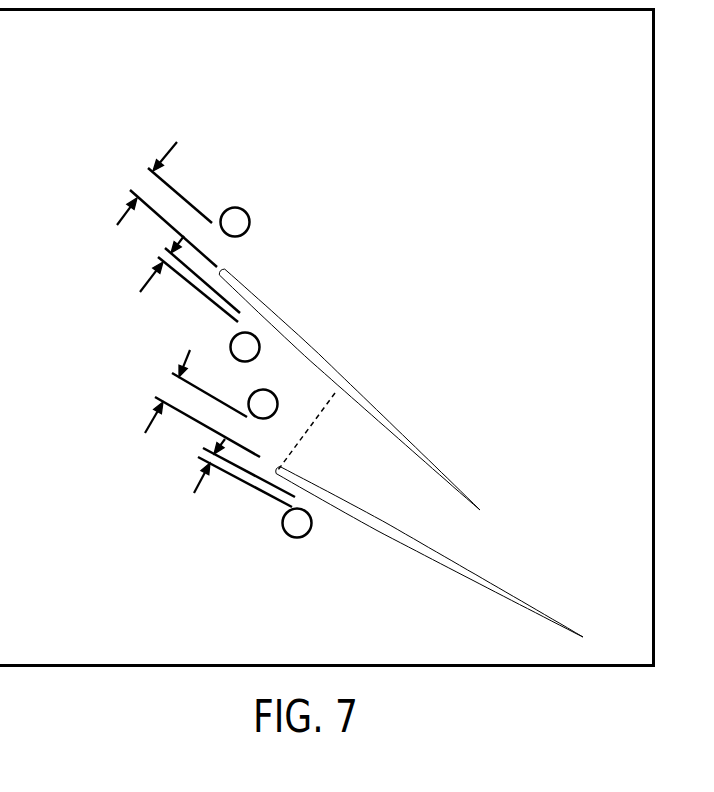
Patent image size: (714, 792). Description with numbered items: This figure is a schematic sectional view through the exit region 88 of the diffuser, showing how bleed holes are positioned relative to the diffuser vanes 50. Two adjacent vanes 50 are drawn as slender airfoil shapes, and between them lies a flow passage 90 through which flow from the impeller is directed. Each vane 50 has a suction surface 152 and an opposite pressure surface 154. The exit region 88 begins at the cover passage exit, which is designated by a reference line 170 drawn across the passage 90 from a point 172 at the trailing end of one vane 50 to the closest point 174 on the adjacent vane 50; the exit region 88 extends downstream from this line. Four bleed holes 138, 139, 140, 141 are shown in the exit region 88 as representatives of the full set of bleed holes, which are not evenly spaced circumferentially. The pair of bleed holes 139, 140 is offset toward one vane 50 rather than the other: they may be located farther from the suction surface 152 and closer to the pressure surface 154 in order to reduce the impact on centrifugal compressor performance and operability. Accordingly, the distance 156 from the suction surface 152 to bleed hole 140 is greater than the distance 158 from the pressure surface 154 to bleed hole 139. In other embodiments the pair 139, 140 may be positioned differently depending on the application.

The vane 50 is at (419, 452).
The exit region 88 is at (210, 165).
The flow passage 90 is at (458, 532).
The bleed hole 138 is at (290, 540).
The bleed hole 139 is at (271, 392).
The bleed hole 140 is at (230, 346).
The bleed hole 141 is at (234, 207).
The suction surface 152 is at (256, 302).
The pressure surface 154 is at (393, 442).
The distance 156 is at (121, 216).
The distance 158 is at (146, 285).
The reference line 170 is at (306, 430).
The point 172 is at (280, 470).
The point 174 is at (334, 392).